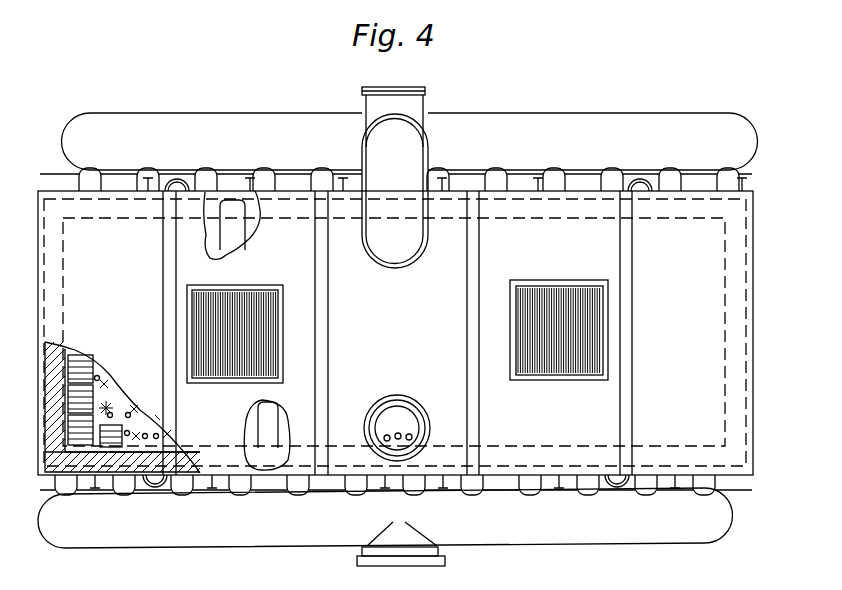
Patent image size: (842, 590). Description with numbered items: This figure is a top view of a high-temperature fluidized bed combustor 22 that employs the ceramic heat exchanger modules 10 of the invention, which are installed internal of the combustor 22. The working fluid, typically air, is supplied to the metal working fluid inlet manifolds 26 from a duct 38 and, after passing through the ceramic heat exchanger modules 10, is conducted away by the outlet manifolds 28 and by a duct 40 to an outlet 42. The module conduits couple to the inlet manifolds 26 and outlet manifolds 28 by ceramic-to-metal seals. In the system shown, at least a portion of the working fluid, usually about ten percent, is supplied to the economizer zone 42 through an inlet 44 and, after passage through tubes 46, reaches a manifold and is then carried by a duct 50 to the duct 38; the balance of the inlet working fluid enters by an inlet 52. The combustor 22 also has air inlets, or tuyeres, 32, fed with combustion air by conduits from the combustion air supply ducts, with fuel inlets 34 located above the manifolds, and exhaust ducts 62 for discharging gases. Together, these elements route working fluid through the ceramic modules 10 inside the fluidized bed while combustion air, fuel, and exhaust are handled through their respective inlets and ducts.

The ceramic heat exchanger module 10 is at (124, 428).
The fluidized bed combustor 22 is at (42, 378).
The working fluid inlet manifold 26 is at (263, 448).
The working fluid outlet manifold 28 is at (237, 228).
The air inlet (tuyere) 32 is at (105, 408).
The fuel inlet 34 is at (63, 438).
The duct 38 is at (733, 125).
The duct 40 is at (717, 527).
The outlet / economizer zone 42 is at (265, 330).
The inlet 44 is at (403, 403).
The tubes 46 is at (398, 435).
The duct 50 is at (413, 167).
The inlet 52 is at (415, 110).
The exhaust duct 62 is at (266, 288).